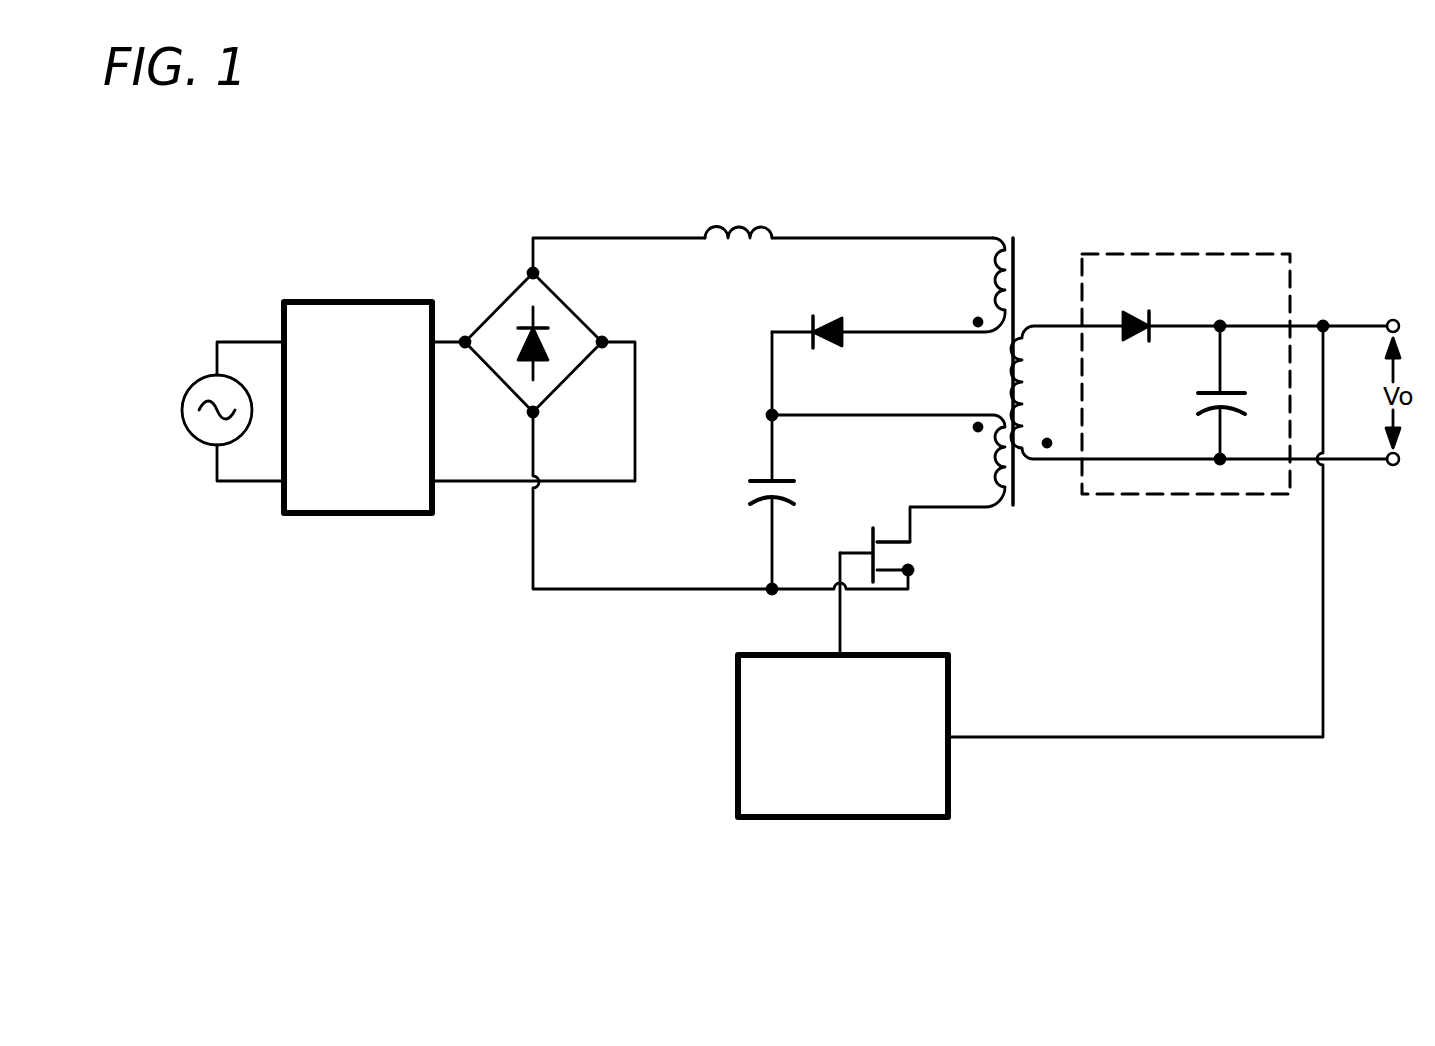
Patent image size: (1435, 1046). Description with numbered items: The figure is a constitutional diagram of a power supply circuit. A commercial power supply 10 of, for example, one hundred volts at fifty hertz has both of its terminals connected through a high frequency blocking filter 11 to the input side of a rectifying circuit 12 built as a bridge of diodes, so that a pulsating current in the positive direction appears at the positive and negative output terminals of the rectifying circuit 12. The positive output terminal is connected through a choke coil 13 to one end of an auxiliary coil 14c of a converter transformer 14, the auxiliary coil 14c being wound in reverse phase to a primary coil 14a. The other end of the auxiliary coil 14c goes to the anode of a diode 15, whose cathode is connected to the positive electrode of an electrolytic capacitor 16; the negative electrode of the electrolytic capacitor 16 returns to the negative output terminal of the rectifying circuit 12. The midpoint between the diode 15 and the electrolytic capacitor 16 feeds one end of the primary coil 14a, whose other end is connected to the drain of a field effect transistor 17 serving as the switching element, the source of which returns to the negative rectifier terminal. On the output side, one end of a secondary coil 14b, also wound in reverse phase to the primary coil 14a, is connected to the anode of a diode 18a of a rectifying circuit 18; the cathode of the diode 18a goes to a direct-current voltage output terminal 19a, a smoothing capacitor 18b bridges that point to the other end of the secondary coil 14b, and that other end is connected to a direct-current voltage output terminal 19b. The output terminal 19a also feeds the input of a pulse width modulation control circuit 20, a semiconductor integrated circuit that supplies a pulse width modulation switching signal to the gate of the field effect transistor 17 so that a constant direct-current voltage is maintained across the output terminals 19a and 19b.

The commercial power supply 10 is at (190, 438).
The high frequency blocking filter 11 is at (365, 300).
The rectifying circuit 12 is at (518, 307).
The choke coil 13 is at (740, 222).
The converter transformer 14 is at (996, 359).
The primary coil 14a is at (980, 447).
The secondary coil 14b is at (1033, 460).
The auxiliary coil 14c is at (980, 273).
The diode 15 is at (818, 350).
The electrolytic capacitor 16 is at (745, 484).
The field effect transistor 17 is at (915, 563).
The rectifying circuit 18 is at (1234, 293).
The diode 18a is at (1136, 342).
The smoothing capacitor 18b is at (1200, 406).
The direct-current voltage output terminal 19a is at (1393, 318).
The direct-current voltage output terminal 19b is at (1393, 468).
The pulse width modulation control circuit 20 is at (853, 817).